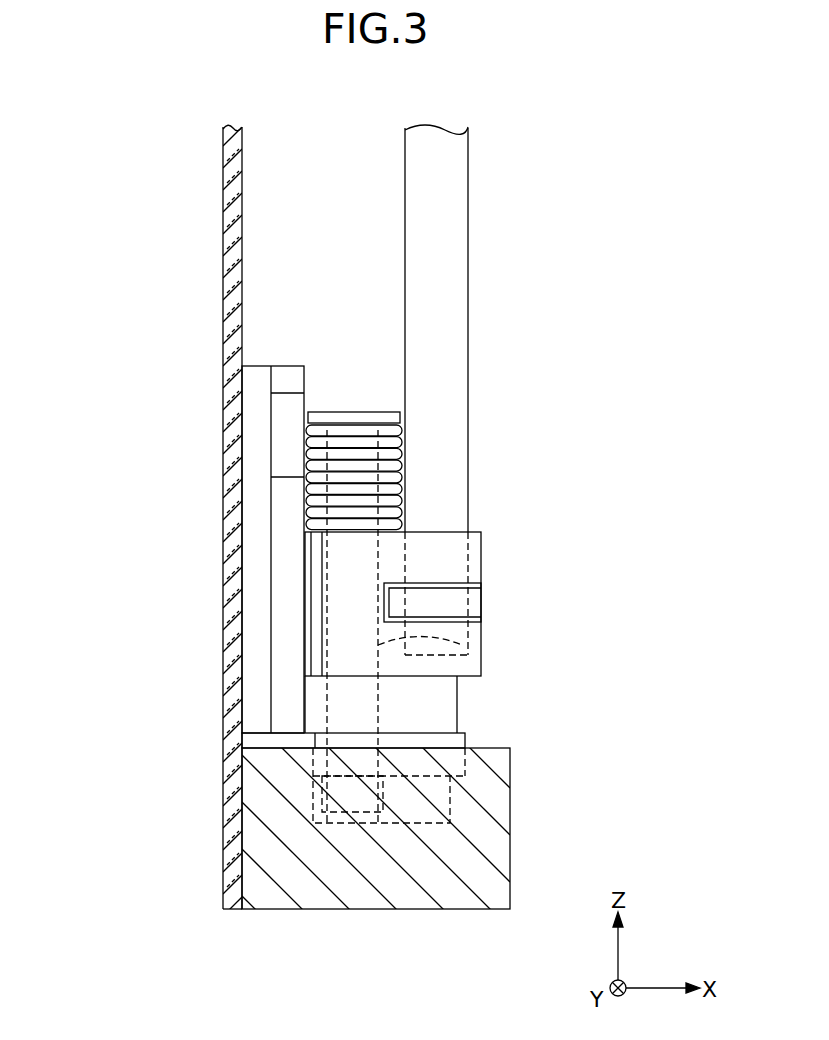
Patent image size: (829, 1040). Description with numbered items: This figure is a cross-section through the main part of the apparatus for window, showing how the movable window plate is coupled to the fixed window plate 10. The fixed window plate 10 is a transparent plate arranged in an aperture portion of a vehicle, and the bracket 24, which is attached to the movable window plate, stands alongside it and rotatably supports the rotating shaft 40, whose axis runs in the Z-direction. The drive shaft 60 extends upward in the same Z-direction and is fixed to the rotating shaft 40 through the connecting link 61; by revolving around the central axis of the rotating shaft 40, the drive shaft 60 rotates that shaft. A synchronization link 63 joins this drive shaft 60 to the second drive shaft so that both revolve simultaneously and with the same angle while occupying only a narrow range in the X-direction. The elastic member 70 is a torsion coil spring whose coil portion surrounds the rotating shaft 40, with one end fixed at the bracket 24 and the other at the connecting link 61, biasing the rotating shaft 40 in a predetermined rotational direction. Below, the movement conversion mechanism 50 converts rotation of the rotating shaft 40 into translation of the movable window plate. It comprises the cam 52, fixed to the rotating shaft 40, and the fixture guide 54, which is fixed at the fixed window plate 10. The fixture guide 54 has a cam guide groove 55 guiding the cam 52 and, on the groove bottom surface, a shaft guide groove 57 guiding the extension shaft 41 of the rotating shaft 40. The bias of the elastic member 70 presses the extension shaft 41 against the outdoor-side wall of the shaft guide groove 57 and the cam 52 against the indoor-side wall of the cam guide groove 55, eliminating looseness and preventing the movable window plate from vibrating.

The fixed window plate 10 is at (231, 898).
The bracket 24 is at (253, 539).
The rotating shaft 40 is at (462, 645).
The extension shaft 41 is at (355, 823).
The movement conversion mechanism 50 is at (287, 926).
The cam 52 is at (466, 740).
The fixture guide 54 is at (330, 897).
The cam guide groove 55 is at (468, 774).
The shaft guide groove 57 is at (413, 823).
The drive shaft 60 is at (447, 289).
The connecting link 61 is at (475, 556).
The synchronization link 63 is at (476, 600).
The elastic member 70 is at (388, 469).